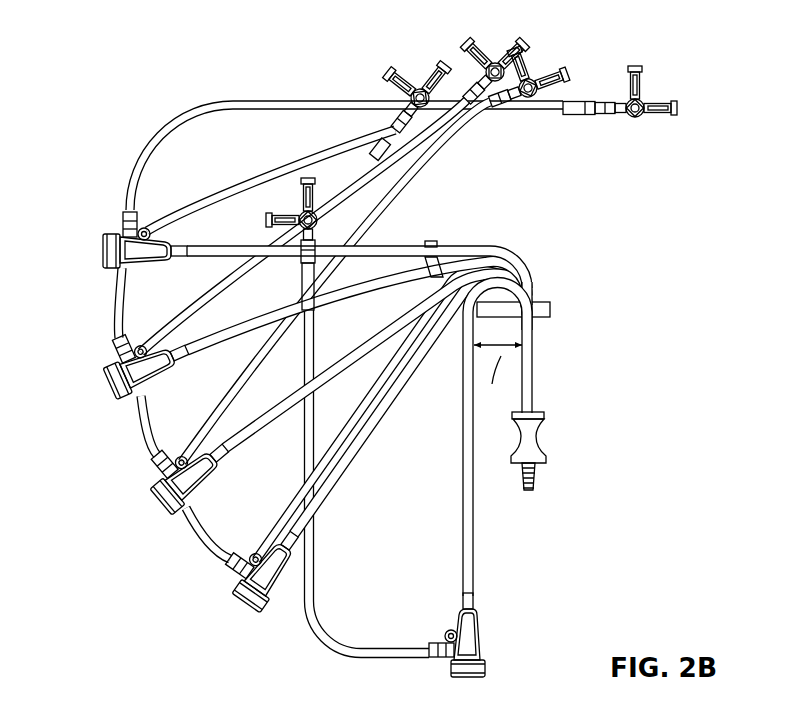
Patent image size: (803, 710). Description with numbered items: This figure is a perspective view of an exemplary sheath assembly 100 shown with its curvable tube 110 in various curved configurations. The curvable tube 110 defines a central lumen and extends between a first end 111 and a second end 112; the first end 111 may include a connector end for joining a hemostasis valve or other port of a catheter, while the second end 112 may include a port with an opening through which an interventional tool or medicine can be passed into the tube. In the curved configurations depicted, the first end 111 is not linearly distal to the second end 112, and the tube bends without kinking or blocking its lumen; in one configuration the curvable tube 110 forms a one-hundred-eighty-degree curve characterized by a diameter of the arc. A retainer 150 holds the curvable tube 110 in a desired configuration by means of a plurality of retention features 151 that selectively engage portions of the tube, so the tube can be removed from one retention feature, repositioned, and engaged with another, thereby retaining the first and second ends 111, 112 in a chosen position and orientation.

The sheath assembly 100 is at (128, 68).
The curvable tube 110 is at (482, 536).
The first end 111 is at (539, 412).
The second end 112 is at (477, 604).
The retainer 150 is at (543, 295).
The retention features 151 is at (441, 243).